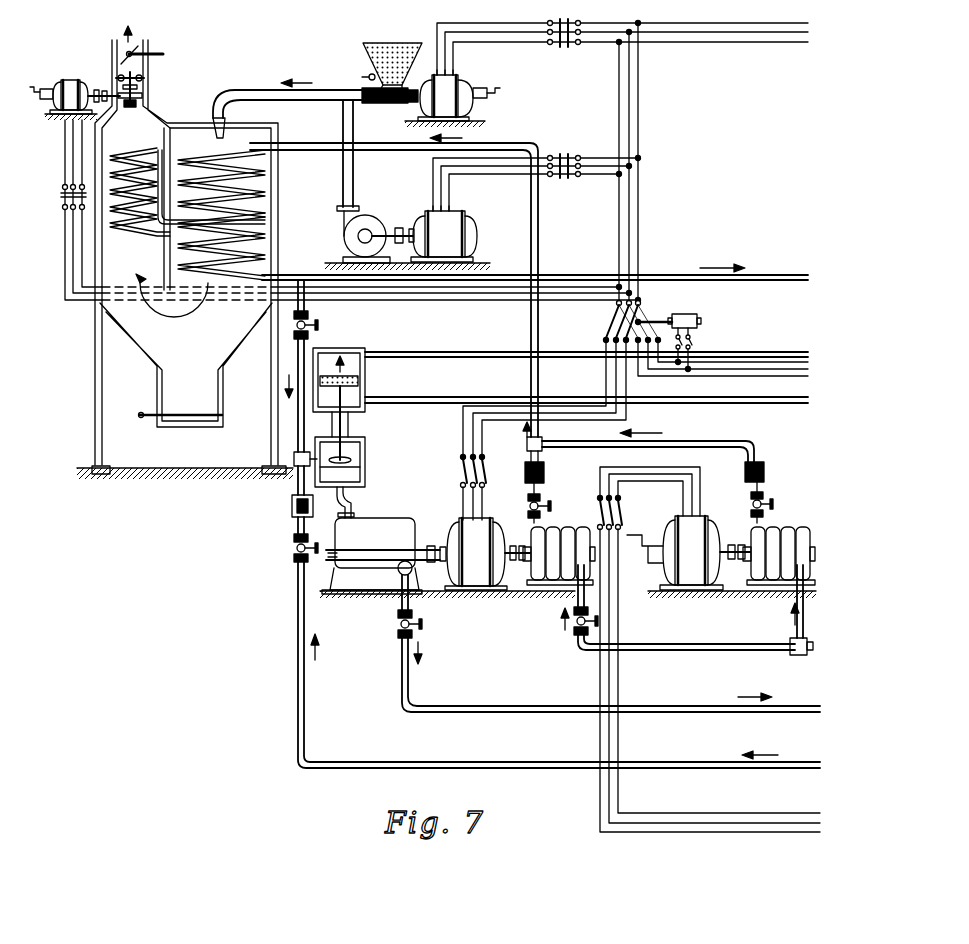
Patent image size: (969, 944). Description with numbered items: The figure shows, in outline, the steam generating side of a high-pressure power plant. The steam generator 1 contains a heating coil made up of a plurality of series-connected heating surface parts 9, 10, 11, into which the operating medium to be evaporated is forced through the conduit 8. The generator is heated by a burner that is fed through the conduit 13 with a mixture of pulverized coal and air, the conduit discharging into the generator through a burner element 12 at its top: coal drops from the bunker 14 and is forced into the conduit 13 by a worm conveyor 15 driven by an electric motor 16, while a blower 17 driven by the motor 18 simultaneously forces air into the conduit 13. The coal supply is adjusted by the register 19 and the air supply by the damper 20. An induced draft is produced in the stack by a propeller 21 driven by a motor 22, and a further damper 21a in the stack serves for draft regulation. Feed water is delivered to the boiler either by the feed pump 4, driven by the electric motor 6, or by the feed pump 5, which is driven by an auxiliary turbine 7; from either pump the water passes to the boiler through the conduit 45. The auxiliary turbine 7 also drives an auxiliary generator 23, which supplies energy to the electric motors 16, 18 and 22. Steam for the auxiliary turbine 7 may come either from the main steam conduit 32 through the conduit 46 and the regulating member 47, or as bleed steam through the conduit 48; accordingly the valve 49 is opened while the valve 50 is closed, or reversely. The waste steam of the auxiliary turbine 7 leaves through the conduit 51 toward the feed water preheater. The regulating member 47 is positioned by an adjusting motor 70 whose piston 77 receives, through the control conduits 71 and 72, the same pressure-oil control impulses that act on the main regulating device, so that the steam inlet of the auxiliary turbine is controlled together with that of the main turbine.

The steam generator 1 is at (90, 362).
The feed pump 4 is at (783, 524).
The feed pump 5 is at (563, 531).
The electric motor 6 is at (713, 522).
The auxiliary turbine 7 is at (384, 524).
The conduit 8 is at (538, 237).
The heating surface part 9 is at (268, 208).
The heating surface part 10 is at (112, 223).
The heating surface part 11 is at (268, 243).
The nozzle 12 is at (214, 114).
The conduit 13 is at (250, 90).
The bunker 14 is at (369, 55).
The worm conveyor 15 is at (390, 107).
The electric motor 16 is at (467, 86).
The blower 17 is at (371, 217).
The motor 18 is at (463, 224).
The register 19 is at (362, 77).
The damper 20 is at (356, 183).
The propeller 21 is at (147, 80).
The damper 21a is at (165, 54).
The motor 22 is at (68, 81).
The auxiliary generator 23 is at (457, 522).
The main steam conduit 32 is at (305, 275).
The conduit 45 is at (806, 657).
The conduit 46 is at (305, 352).
The regulating member 47 is at (363, 455).
The conduit 48 is at (797, 762).
The valve 49 is at (318, 327).
The valve 50 is at (294, 548).
The conduit 51 is at (797, 706).
The adjusting motor 70 is at (402, 395).
The control conduit 71 is at (783, 350).
The control conduit 72 is at (793, 398).
The piston 77 is at (359, 382).